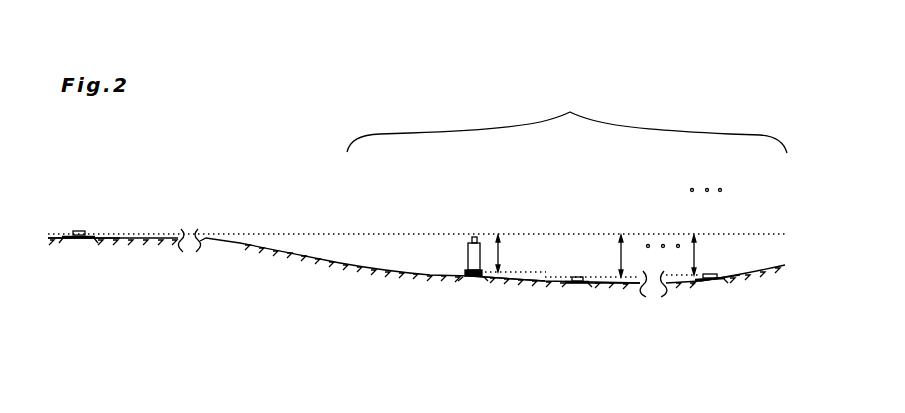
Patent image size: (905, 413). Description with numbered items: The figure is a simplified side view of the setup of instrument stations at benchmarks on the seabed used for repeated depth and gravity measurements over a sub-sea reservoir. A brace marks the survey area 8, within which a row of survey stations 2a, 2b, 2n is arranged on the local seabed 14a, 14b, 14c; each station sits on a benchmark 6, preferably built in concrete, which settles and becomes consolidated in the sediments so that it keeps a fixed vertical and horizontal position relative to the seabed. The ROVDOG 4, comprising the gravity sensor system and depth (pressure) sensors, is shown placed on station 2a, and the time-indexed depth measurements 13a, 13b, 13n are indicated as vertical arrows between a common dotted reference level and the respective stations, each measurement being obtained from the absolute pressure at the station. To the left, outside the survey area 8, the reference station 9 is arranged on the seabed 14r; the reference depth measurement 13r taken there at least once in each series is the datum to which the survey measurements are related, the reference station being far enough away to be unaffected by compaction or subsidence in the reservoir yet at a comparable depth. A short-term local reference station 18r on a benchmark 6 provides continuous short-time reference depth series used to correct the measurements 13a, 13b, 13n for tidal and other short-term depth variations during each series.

The survey station 2a is at (468, 273).
The survey station 2b is at (580, 277).
The survey station 2n is at (710, 274).
The ROVDOG 4 is at (480, 238).
The benchmark 6 is at (86, 236).
The survey area 8 is at (567, 119).
The reference station 9 is at (114, 209).
The short-term local reference station 18r is at (87, 231).
The reference depth measurement 13r is at (54, 235).
The depth measurement 13a is at (504, 251).
The depth measurement 13b is at (625, 262).
The depth measurement 13n is at (698, 262).
The seabed at reference station 14r is at (145, 267).
The local seabed 14a is at (499, 288).
The local seabed 14b is at (598, 292).
The local seabed 14c is at (730, 290).